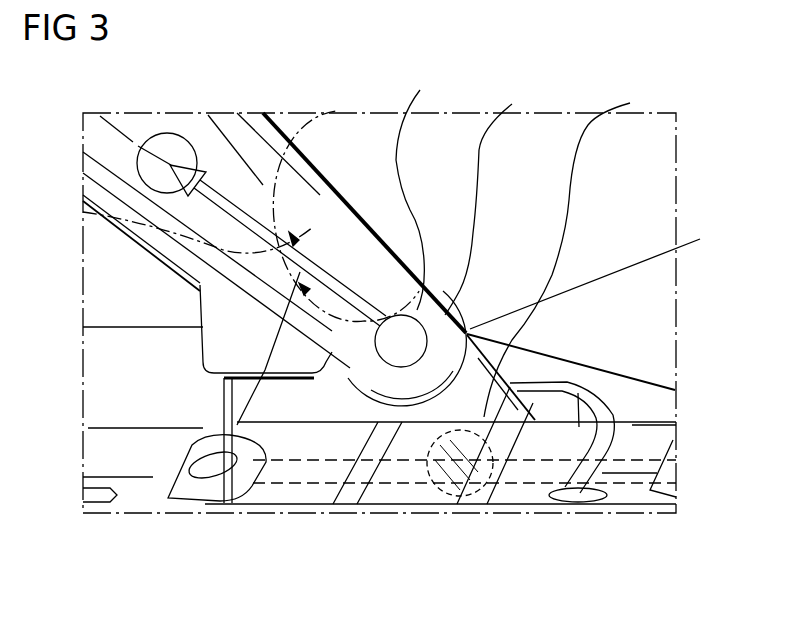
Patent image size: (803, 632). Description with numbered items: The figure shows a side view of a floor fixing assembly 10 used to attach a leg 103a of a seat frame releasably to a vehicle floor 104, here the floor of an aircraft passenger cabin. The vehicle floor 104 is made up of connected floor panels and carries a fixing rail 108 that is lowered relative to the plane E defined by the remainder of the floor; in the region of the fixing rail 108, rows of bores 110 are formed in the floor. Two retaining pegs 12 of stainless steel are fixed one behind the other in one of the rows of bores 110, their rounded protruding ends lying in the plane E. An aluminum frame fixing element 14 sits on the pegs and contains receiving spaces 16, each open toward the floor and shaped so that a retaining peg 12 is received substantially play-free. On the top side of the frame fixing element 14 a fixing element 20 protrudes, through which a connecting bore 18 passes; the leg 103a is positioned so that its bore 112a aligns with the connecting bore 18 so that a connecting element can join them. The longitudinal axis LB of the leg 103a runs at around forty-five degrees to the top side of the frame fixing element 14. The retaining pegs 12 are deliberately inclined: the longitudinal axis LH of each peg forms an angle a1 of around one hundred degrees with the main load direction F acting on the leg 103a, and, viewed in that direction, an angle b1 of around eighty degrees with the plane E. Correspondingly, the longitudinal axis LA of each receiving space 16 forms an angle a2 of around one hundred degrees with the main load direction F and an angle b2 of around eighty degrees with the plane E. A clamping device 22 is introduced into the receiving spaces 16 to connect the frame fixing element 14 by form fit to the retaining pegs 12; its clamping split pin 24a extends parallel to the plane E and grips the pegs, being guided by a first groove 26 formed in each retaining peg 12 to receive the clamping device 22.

The floor fixing assembly 10 is at (698, 172).
The retaining peg 12 is at (185, 468).
The frame fixing element 14 is at (375, 505).
The receiving space 16 is at (447, 465).
The connecting bore 18 is at (351, 197).
The fixing element 20 is at (572, 246).
The clamping device 22 is at (627, 434).
The clamping split pin 24a is at (367, 507).
The first groove 26 is at (195, 468).
The leg 103a is at (234, 127).
The vehicle floor 104 is at (614, 378).
The fixing rail 108 is at (680, 507).
The bores 110 is at (105, 508).
The bore 112a is at (509, 195).
The main load direction F is at (272, 205).
The plane E is at (95, 335).
The longitudinal axis of the frame leg LB is at (128, 133).
The longitudinal axis of the retaining peg LH is at (183, 507).
The longitudinal axis of the receiving space LA is at (437, 507).
The angle α1 a1 is at (83, 212).
The angle α2 a2 is at (602, 273).
The angle β1 b1 is at (238, 505).
The angle β2 b2 is at (492, 497).